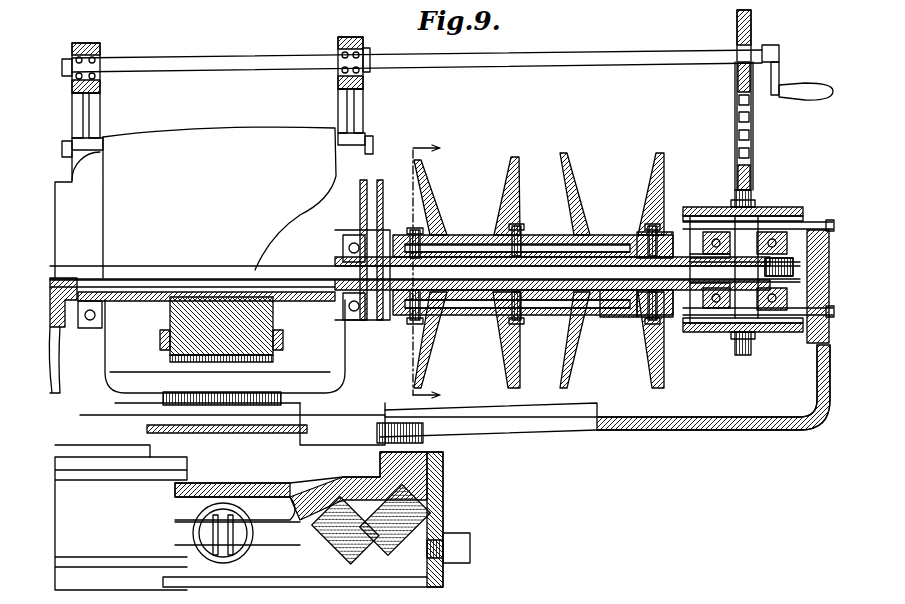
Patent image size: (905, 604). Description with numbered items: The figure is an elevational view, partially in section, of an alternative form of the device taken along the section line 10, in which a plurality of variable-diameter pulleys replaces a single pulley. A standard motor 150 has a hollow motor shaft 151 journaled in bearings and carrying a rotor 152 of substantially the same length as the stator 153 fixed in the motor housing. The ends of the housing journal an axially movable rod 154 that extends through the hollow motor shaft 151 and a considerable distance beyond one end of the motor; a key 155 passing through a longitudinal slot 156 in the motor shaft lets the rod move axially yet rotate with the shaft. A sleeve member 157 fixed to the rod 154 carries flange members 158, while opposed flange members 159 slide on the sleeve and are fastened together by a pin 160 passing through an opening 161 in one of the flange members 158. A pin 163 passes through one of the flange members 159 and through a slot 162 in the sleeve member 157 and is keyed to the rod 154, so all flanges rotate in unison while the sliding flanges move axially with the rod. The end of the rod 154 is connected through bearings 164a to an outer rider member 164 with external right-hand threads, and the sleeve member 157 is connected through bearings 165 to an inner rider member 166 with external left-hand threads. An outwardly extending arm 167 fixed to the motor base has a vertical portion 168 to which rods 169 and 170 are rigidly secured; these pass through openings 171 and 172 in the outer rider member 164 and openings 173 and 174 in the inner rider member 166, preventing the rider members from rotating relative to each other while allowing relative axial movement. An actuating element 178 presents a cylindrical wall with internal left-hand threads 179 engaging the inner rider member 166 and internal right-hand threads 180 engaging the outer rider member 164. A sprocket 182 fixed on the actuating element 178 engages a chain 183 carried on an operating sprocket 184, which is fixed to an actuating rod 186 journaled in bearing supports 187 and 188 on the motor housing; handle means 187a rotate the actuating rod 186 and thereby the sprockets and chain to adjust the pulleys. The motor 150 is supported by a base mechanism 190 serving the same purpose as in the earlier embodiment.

The section line 10 is at (415, 273).
The motor 150 is at (207, 128).
The hollow motor shaft 151 is at (133, 300).
The rotor 152 is at (162, 341).
The stator 153 is at (228, 405).
The axially movable rod 154 is at (278, 300).
The key 155 is at (305, 260).
The longitudinal slot 156 is at (313, 268).
The sleeve member 157 is at (637, 274).
The flange members 158 is at (505, 166).
The opposed flange members 159 is at (425, 168).
The pin 160 is at (468, 250).
The opening 161 is at (520, 250).
The slot 162 is at (446, 295).
The pin 163 is at (406, 302).
The outer rider member 164 is at (770, 222).
The bearings 164a is at (790, 232).
The bearings 165 is at (692, 322).
The inner rider member 166 is at (726, 210).
The outwardly extending arm 167 is at (662, 422).
The vertical portion 168 is at (823, 403).
The rod 169 is at (800, 222).
The rod 170 is at (720, 332).
The opening 171 is at (757, 208).
The opening 172 is at (771, 332).
The opening 173 is at (703, 212).
The opening 174 is at (707, 332).
The actuating element 178 is at (790, 225).
The internal left-hand threads 179 is at (646, 310).
The internal right-hand threads 180 is at (779, 320).
The sprocket 182 is at (745, 356).
The chain 183 is at (752, 128).
The operating sprocket 184 is at (752, 28).
The actuating rod 186 is at (594, 53).
The bearing support 187 is at (338, 37).
The handle means 187a is at (800, 88).
The bearing support 188 is at (92, 43).
The base mechanism 190 is at (459, 488).